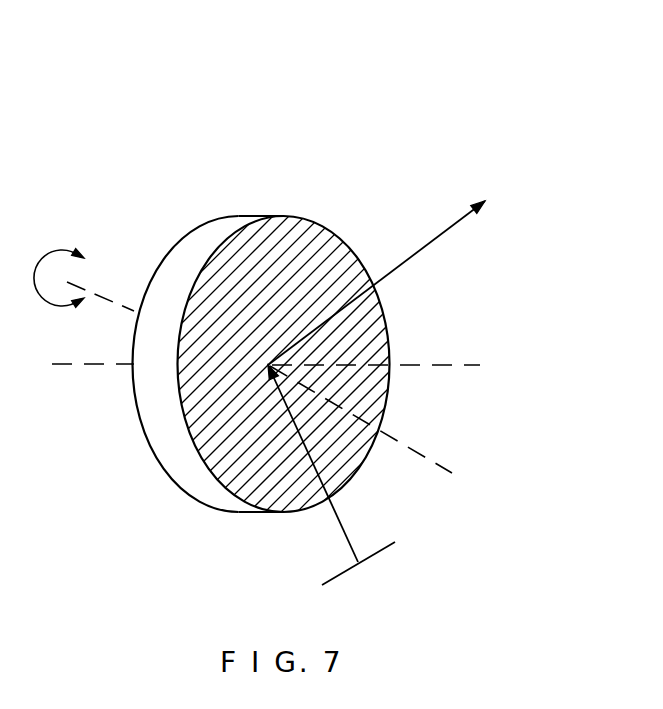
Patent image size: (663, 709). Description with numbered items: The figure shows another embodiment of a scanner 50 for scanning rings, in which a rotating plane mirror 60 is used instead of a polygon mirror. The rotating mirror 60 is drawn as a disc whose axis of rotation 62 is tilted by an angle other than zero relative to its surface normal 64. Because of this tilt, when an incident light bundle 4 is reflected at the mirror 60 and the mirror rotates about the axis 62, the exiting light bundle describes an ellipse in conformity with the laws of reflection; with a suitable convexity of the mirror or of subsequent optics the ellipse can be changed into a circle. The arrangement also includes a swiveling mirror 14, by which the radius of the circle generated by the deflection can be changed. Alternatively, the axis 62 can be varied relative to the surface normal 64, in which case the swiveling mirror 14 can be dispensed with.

The scanner 50 is at (355, 157).
The rotating mirror 60 is at (230, 263).
The light bundle 4 is at (415, 262).
The surface normal 64 is at (475, 365).
The axis of rotation 62 is at (430, 455).
The swiveling mirror 14 is at (396, 540).